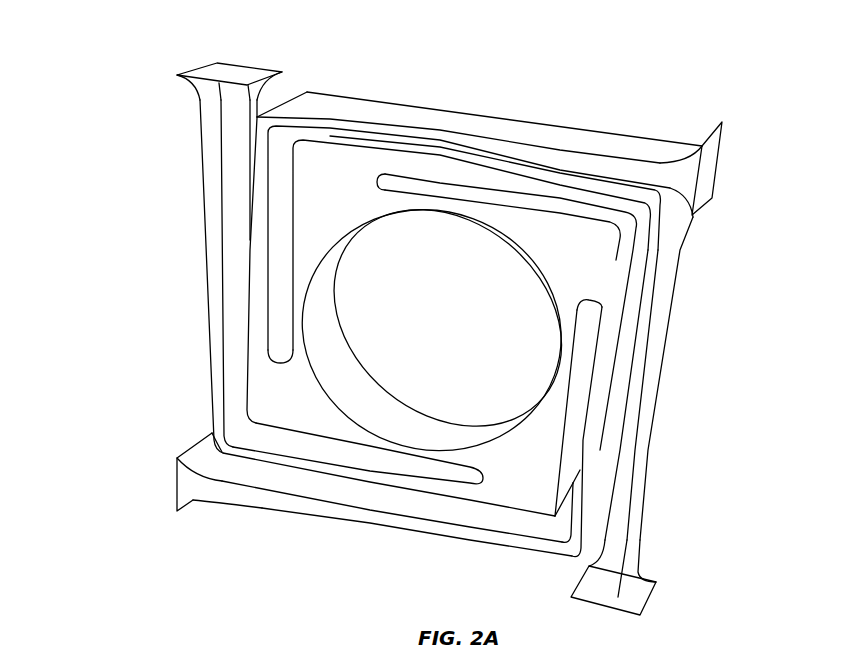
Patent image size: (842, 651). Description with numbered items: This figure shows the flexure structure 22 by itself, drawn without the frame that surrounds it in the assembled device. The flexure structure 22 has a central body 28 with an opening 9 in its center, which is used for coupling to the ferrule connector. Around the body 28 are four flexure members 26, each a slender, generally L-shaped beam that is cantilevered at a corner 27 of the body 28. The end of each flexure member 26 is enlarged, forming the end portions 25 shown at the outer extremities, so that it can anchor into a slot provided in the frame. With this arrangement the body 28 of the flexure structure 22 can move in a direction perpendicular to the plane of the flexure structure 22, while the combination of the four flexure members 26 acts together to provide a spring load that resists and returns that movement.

The flexure structure 22 is at (132, 472).
The mounting flange / post 25 is at (213, 73).
The flexure member 26 is at (206, 240).
The corner 27 is at (318, 158).
The body 28 is at (547, 230).
The opening 9 is at (438, 338).